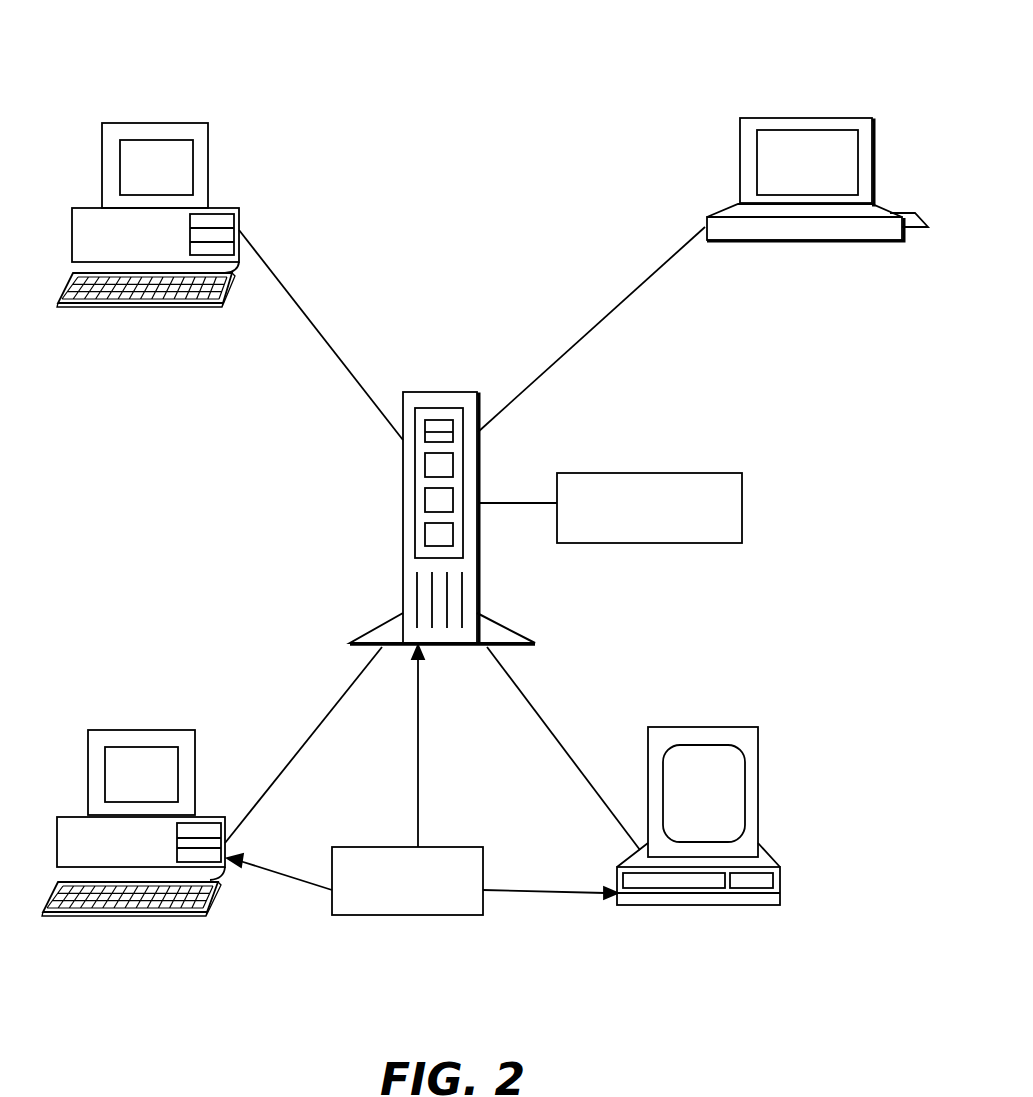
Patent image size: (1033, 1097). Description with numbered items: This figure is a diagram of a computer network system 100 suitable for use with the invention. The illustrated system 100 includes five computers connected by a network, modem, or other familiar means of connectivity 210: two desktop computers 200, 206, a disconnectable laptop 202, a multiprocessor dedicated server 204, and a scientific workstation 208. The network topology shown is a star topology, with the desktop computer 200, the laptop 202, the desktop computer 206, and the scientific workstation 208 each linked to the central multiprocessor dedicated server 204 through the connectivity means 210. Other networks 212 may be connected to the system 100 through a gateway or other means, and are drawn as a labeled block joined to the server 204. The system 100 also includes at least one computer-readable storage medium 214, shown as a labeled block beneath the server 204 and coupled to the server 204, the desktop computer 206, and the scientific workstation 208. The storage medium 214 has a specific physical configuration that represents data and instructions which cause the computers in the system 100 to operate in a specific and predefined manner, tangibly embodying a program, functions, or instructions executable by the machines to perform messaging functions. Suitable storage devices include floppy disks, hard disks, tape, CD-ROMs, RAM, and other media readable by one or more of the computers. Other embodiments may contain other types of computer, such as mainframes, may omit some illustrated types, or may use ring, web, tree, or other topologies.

The system 100 is at (772, 67).
The desktop computer 200 is at (210, 180).
The disconnectable laptop 202 is at (738, 160).
The multiprocessor dedicated server 204 is at (425, 392).
The desktop computer 206 is at (122, 728).
The scientific workstation 208 is at (740, 727).
The means of connectivity 210 is at (305, 308).
The other networks 212 is at (628, 473).
The computer-readable storage medium 214 is at (482, 872).